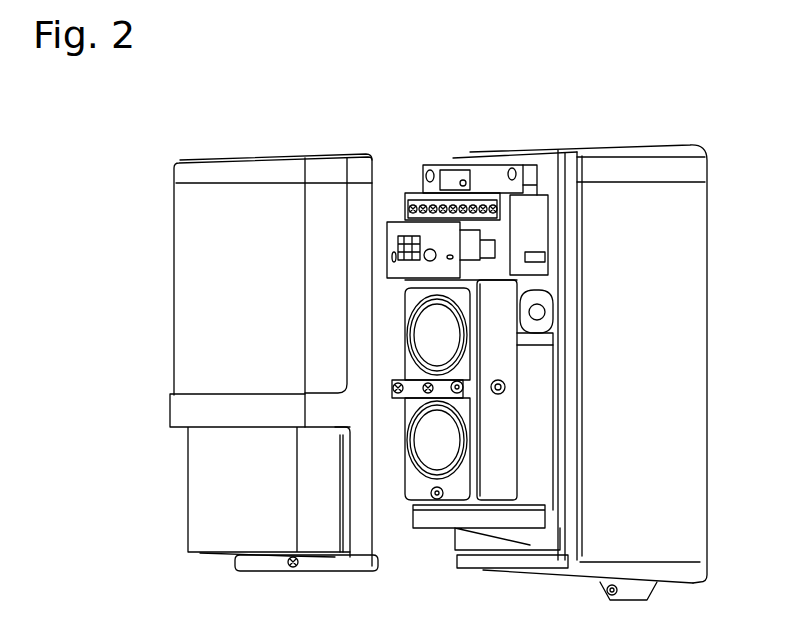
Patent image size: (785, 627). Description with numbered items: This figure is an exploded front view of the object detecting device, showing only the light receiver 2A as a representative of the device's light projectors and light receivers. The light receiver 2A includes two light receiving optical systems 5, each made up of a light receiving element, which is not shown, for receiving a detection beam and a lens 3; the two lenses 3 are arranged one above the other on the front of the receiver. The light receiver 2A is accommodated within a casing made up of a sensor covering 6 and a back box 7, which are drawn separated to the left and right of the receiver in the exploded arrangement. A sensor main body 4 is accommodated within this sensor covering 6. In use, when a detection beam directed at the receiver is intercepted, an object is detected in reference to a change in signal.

The light receiver 2A is at (473, 99).
The lens 3 is at (438, 332).
The sensor main body 4 is at (434, 159).
The light receiving optical system 5 is at (403, 337).
The sensor covering 6 is at (238, 202).
The back box 7 is at (650, 208).